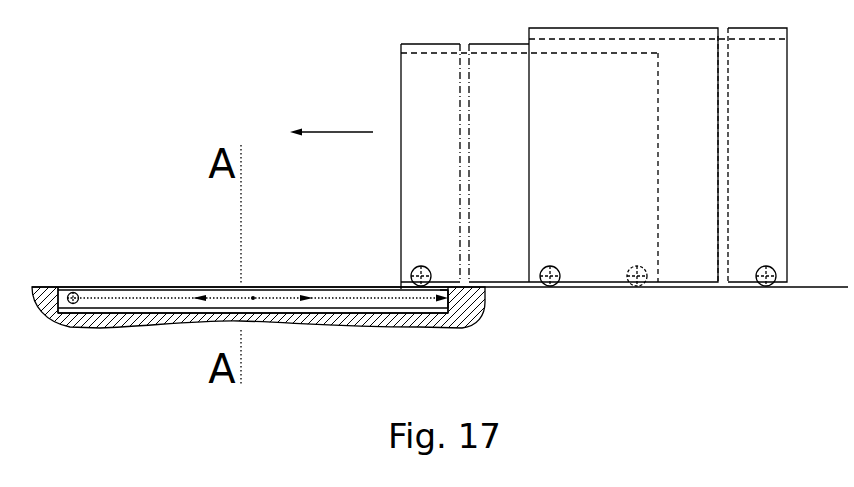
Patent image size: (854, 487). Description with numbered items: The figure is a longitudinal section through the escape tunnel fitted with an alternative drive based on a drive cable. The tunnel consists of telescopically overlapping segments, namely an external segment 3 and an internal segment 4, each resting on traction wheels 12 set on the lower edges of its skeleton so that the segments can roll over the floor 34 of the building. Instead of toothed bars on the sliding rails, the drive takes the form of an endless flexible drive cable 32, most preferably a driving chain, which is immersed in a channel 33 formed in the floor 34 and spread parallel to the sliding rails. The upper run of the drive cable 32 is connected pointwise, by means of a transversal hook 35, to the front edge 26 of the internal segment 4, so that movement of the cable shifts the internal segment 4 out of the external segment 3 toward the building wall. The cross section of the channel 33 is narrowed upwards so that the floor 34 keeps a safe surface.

The external segment 3 is at (529, 118).
The internal segment 4 is at (401, 130).
The traction wheels 12 is at (414, 269).
The front edge 26 is at (401, 208).
The drive cable 32 is at (147, 305).
The channel 33 is at (69, 291).
The floor 34 is at (48, 287).
The transversal hook 35 is at (397, 288).